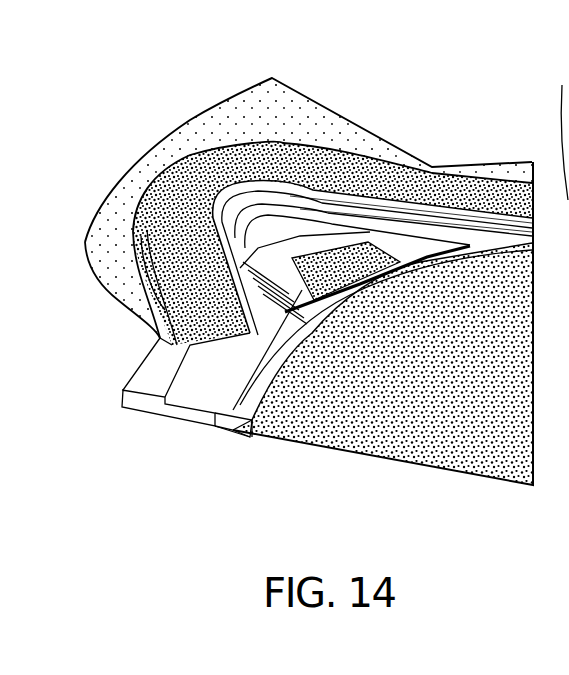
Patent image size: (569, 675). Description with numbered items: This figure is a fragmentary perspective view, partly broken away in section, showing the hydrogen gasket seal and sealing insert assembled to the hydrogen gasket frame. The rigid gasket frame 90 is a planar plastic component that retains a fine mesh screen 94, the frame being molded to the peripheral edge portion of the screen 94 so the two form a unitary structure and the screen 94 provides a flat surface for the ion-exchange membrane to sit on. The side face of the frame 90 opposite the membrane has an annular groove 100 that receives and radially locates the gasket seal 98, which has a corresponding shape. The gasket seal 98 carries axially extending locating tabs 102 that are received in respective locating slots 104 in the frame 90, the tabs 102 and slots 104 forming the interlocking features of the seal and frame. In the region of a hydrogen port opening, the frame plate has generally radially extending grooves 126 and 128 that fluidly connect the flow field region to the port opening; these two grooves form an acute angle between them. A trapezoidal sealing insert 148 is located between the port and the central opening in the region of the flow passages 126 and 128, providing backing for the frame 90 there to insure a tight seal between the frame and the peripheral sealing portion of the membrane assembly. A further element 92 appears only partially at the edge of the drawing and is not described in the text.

The rigid gasket frame 90 is at (219, 104).
The gasket seal 98 is at (166, 206).
The radially extending groove 126 is at (397, 230).
The sealing insert 148 is at (357, 240).
The radially extending groove 128 is at (283, 280).
The annular groove 100 is at (168, 375).
The locating tab 102 is at (218, 430).
The locating slot 104 is at (243, 430).
The screen 94 is at (417, 465).
The partial component 92 is at (562, 128).